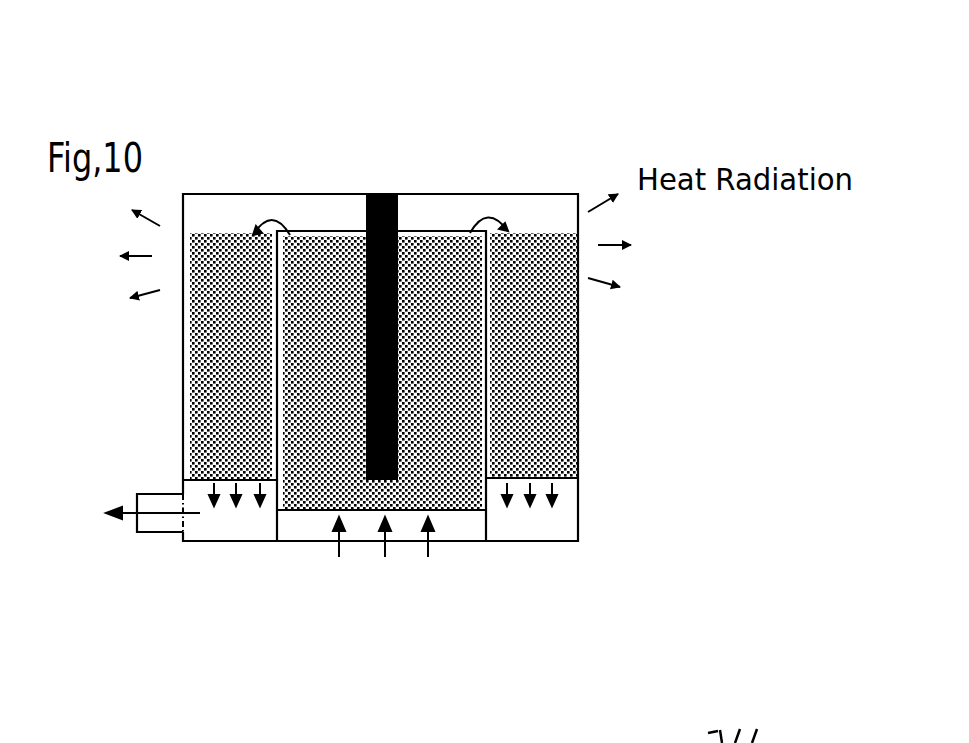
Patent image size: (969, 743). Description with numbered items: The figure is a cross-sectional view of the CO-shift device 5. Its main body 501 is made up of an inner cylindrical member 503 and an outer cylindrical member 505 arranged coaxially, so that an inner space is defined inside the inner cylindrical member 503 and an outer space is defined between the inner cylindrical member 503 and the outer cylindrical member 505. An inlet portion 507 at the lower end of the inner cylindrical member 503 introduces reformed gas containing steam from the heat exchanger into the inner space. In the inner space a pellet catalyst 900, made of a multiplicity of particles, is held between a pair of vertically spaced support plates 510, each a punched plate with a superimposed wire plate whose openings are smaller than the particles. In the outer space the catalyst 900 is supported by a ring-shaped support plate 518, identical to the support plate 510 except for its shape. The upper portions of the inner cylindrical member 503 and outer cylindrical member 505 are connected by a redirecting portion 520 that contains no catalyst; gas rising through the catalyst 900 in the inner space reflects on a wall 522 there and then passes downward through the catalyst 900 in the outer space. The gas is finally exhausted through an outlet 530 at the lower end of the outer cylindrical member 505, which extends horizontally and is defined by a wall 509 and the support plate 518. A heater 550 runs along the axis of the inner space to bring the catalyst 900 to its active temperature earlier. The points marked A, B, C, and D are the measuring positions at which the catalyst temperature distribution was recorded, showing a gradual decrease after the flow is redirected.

The CO-shift device 5 is at (652, 360).
The main body 501 is at (580, 452).
The inner cylindrical member 503 is at (495, 497).
The outer cylindrical member 505 is at (580, 400).
The inlet portion 507 is at (297, 530).
The wall 509 is at (190, 545).
The support plate 510 is at (423, 258).
The ring-shaped support plate 518 is at (185, 487).
The redirecting portion 520 is at (302, 186).
The wall 522 is at (238, 197).
The outlet 530 is at (185, 543).
The heater 550 is at (383, 194).
The catalyst 900 is at (460, 515).
The measuring position A is at (318, 500).
The measuring position B is at (318, 262).
The measuring position C is at (228, 270).
The measuring position D is at (236, 454).